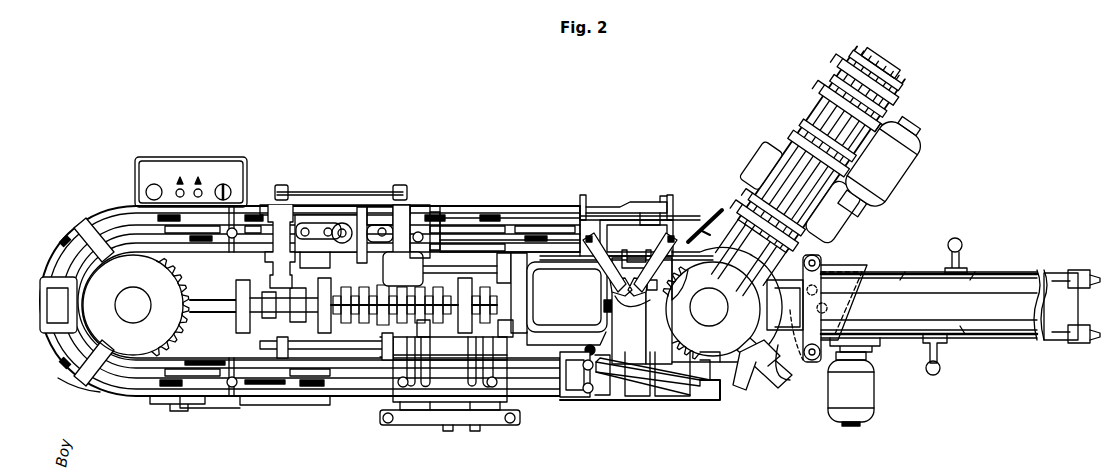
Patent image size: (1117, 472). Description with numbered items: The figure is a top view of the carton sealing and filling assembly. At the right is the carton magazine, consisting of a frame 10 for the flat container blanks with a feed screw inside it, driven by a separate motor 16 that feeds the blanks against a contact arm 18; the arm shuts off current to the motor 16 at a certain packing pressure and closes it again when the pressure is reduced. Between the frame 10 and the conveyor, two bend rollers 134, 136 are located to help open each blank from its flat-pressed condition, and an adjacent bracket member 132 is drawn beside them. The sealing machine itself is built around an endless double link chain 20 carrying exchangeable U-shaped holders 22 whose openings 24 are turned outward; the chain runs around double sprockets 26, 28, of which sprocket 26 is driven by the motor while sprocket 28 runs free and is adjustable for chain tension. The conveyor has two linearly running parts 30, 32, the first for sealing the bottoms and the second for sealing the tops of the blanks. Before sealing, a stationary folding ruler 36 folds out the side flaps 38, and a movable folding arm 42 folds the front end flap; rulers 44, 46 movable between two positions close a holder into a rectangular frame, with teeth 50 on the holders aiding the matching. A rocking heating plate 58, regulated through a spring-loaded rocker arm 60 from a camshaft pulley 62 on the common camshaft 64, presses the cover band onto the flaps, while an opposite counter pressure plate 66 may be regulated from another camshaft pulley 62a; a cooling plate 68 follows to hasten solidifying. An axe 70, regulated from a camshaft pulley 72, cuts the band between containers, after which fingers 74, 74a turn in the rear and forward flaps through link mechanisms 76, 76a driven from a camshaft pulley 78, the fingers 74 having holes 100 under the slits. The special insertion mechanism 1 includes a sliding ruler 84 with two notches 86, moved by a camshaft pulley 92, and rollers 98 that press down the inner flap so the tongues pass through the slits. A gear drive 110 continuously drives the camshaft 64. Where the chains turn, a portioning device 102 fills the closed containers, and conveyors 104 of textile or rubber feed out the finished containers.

The axis 1 is at (667, 212).
The frame 10 is at (1003, 329).
The motor 16 is at (874, 400).
The contact arm 18 is at (848, 315).
The double link chain 20 is at (762, 338).
The holders 22 is at (742, 393).
The openings 24 is at (690, 398).
The double sprocket 26 is at (612, 300).
The double sprocket 28 is at (66, 378).
The linearly running part 30 is at (332, 360).
The linearly running part 32 is at (540, 245).
The folding ruler 36 is at (680, 382).
The side flap 38 is at (642, 382).
The folding arm 42 is at (566, 396).
The ruler 44 is at (482, 426).
The ruler 46 is at (400, 205).
The nibs or teeth 50 is at (138, 400).
The heating plate 58 is at (320, 220).
The rocker arm 60 is at (266, 314).
The camshaft pulley 62 is at (290, 398).
The camshaft pulley 62a is at (456, 292).
The common camshaft 64 is at (222, 312).
The counter pressure plate 66 is at (442, 395).
The cooling plate 68 is at (372, 222).
The axe 70 is at (420, 208).
The camshaft pulley 72 is at (432, 352).
The finger 74 is at (590, 258).
The finger 74a is at (680, 240).
The link mechanism 76 is at (613, 292).
The link mechanism 76a is at (678, 260).
The camshaft pulley 78 is at (604, 308).
The sliding ruler 84 is at (665, 235).
The notches 86 is at (622, 250).
The camshaft pulley 92 is at (658, 325).
The rollers 98 is at (652, 240).
The holes 100 is at (585, 212).
The portioning device 102 is at (40, 283).
The conveyors 104 is at (858, 72).
The gear drive 110 is at (552, 285).
The pivot bracket 132 is at (798, 375).
The bend roller 134 is at (822, 375).
The bend roller 136 is at (842, 262).